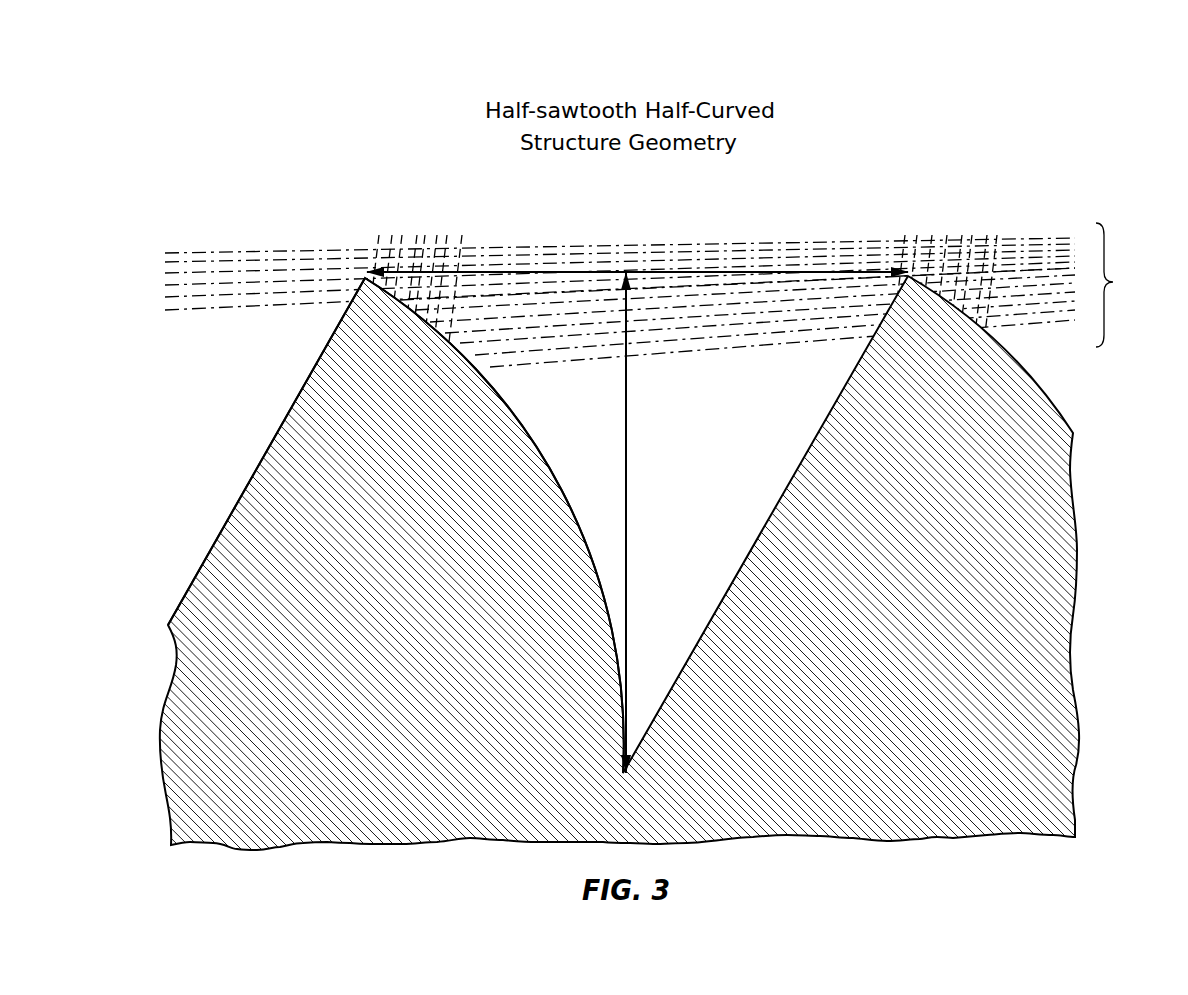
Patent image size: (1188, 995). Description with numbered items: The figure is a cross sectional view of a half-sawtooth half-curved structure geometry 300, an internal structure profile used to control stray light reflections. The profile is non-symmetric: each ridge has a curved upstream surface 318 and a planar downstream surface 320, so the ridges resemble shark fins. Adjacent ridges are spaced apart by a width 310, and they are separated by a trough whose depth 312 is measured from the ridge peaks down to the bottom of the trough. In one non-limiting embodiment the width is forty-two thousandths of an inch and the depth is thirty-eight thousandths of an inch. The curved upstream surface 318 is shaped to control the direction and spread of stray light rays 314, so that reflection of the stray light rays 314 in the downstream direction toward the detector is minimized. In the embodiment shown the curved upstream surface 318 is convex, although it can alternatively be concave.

The half-sawtooth half-curved structure geometry 300 is at (279, 80).
The width 310 is at (801, 272).
The depth 312 is at (627, 412).
The stray light rays 314 is at (663, 295).
The curved upstream surface 318 is at (507, 403).
The planar downstream surface 320 is at (306, 382).